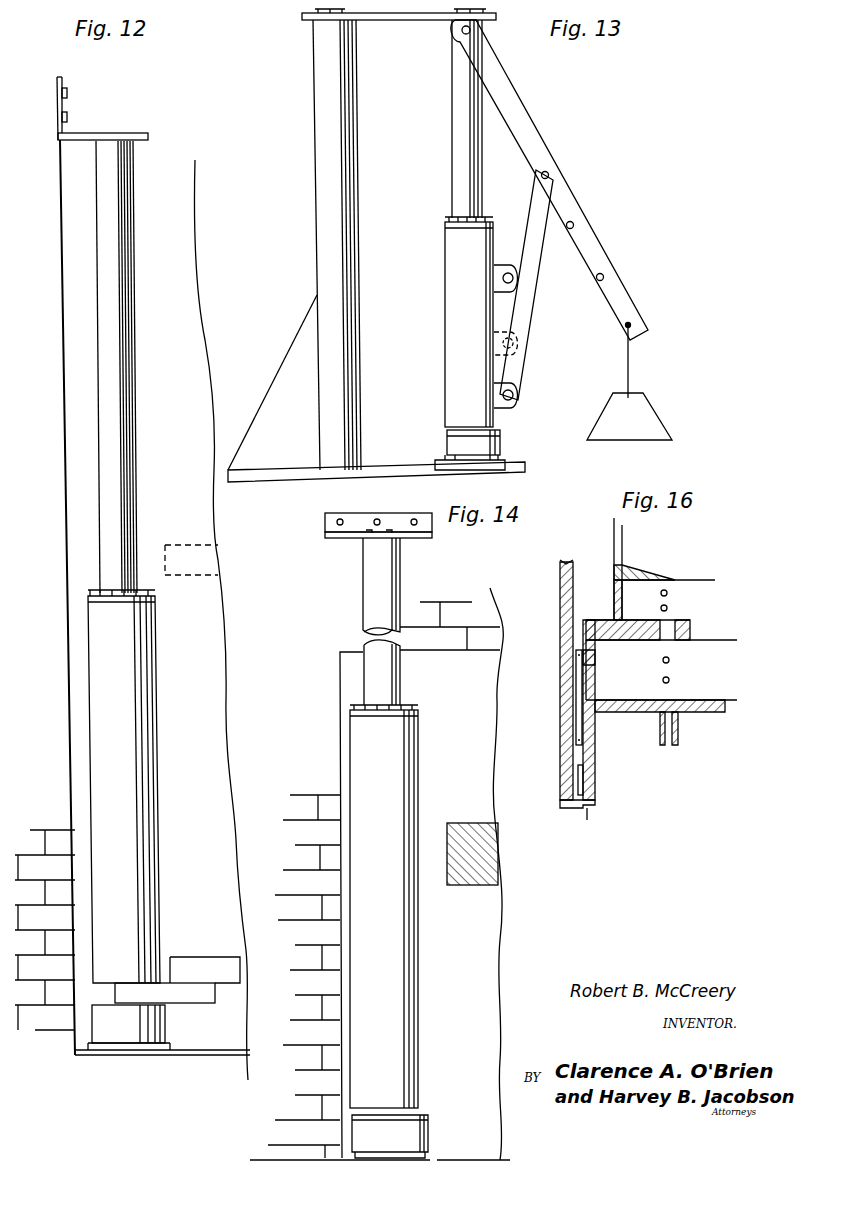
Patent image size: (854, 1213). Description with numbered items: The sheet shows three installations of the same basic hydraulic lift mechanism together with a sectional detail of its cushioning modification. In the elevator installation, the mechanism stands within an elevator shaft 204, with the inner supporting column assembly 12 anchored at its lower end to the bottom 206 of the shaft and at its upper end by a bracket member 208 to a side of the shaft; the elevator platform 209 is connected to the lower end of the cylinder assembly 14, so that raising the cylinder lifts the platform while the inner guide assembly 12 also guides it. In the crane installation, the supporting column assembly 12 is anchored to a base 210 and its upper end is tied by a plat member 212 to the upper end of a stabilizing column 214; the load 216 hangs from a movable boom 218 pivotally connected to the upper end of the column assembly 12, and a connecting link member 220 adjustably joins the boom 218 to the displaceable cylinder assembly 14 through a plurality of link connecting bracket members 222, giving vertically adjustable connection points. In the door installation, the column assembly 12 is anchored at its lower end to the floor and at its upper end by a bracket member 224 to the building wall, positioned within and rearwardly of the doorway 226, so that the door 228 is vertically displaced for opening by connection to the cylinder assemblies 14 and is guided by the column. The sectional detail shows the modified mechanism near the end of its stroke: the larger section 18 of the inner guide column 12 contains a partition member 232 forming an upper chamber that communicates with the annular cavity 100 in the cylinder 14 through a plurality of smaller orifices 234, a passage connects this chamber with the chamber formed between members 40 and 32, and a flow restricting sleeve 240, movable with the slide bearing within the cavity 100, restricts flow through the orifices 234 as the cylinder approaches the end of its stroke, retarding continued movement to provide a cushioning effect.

In FIG. 12, the inner guide column 12 is at (159, 430).
In FIG. 13, the inner guide column 12 is at (444, 176).
In FIG. 14, the inner guide column 12 is at (353, 602).
In FIG. 12, the cylinder assembly 14 is at (81, 718).
In FIG. 13, the cylinder assembly 14 is at (438, 336).
In FIG. 14, the cylinder assembly 14 is at (347, 767).
In FIG. 16, the cylinder assembly 14 is at (553, 674).
In FIG. 16, the larger section of inner guide column 18 is at (602, 789).
In FIG. 16, the member 32 is at (695, 634).
In FIG. 16, the member 40 is at (630, 580).
In FIG. 16, the annular cavity 100 is at (586, 597).
In FIG. 12, the elevator shaft 204 is at (66, 495).
In FIG. 12, the bottom of elevator shaft 206 is at (200, 1050).
In FIG. 12, the bracket member 208 is at (86, 133).
In FIG. 12, the elevator platform 209 is at (198, 958).
In FIG. 13, the base 210 is at (393, 465).
In FIG. 13, the plat member 212 is at (410, 21).
In FIG. 13, the stabilizing column 214 is at (315, 130).
In FIG. 13, the load 216 is at (645, 415).
In FIG. 13, the movable boom 218 is at (594, 252).
In FIG. 13, the connecting link member 220 is at (527, 308).
In FIG. 13, the link connecting bracket members 222 is at (505, 262).
In FIG. 14, the bracket member 224 is at (330, 524).
In FIG. 14, the doorway 226 is at (340, 688).
In FIG. 14, the door 228 is at (380, 874).
In FIG. 16, the partition member 232 is at (630, 713).
In FIG. 16, the orifices 234 is at (585, 656).
In FIG. 16, the flow restricting sleeve 240 is at (578, 692).